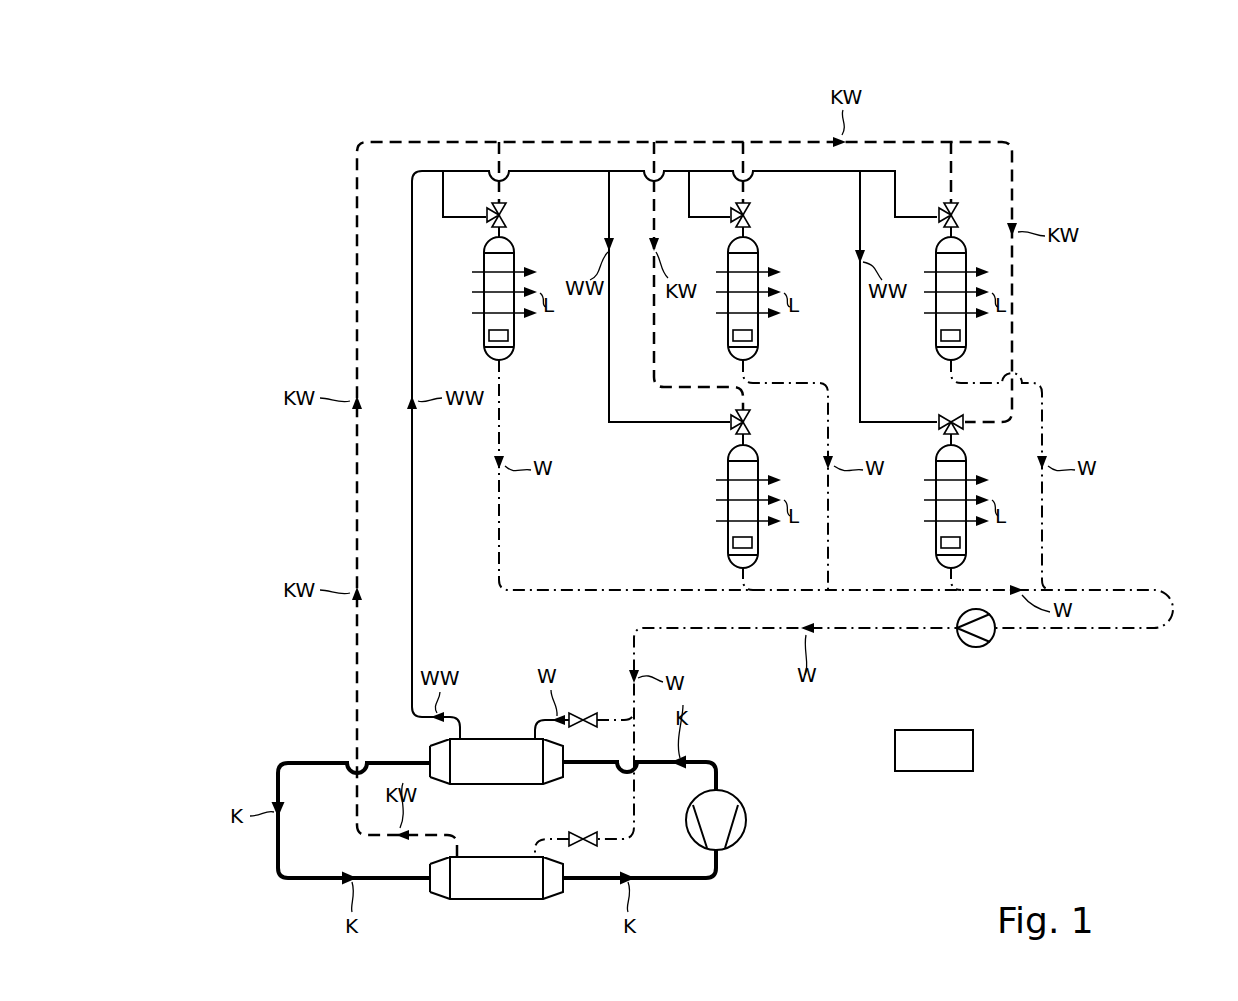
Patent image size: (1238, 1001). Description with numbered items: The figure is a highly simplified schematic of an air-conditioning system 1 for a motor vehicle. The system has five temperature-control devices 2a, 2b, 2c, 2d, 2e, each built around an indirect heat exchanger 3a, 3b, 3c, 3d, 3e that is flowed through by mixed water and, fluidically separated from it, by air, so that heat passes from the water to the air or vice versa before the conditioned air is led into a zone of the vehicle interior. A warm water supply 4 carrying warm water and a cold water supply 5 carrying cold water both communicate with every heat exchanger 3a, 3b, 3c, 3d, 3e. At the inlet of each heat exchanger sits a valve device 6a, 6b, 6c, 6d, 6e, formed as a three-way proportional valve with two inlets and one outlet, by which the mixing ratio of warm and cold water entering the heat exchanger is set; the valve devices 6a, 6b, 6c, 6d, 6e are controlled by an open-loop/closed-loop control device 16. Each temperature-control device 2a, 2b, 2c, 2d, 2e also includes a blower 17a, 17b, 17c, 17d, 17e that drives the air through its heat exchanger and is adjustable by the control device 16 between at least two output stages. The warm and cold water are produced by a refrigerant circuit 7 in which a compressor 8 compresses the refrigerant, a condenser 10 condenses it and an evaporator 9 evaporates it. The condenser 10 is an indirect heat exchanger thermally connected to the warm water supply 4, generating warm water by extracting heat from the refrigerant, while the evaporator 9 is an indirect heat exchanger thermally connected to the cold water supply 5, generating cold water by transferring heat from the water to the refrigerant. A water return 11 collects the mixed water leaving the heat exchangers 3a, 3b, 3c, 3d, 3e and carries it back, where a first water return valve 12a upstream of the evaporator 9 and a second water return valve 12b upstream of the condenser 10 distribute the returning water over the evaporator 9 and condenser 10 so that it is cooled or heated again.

The air-conditioning system 1 is at (726, 440).
The temperature-control device 2a is at (520, 368).
The temperature-control device 2b is at (772, 345).
The temperature-control device 2c is at (772, 543).
The temperature-control device 2d is at (978, 345).
The temperature-control device 2e is at (978, 543).
The indirect heat exchanger 3a is at (507, 259).
The indirect heat exchanger 3b is at (752, 259).
The indirect heat exchanger 3c is at (730, 468).
The indirect heat exchanger 3d is at (936, 259).
The indirect heat exchanger 3e is at (960, 468).
The warm water supply 4 is at (418, 450).
The cold water supply 5 is at (350, 450).
The valve device 6a is at (506, 217).
The valve device 6b is at (750, 217).
The valve device 6c is at (750, 422).
The valve device 6d is at (958, 217).
The valve device 6e is at (945, 418).
The refrigerant circuit 7 is at (268, 762).
The compressor 8 is at (747, 818).
The evaporator 9 is at (491, 890).
The condenser 10 is at (487, 771).
The water return 11 is at (502, 524).
The first water return valve 12a is at (588, 832).
The second water return valve 12b is at (588, 712).
The open-loop/closed-loop control device 16 is at (975, 750).
The blower 17a is at (488, 336).
The blower 17b is at (732, 336).
The blower 17c is at (732, 543).
The blower 17d is at (940, 336).
The blower 17e is at (940, 543).